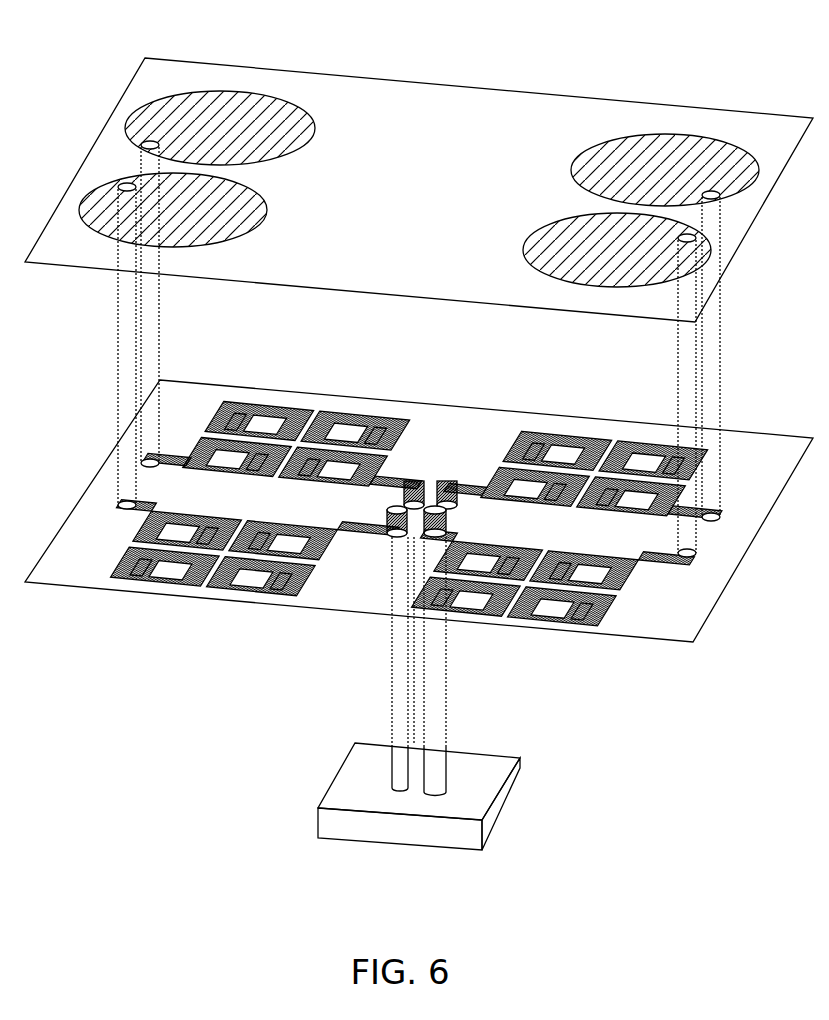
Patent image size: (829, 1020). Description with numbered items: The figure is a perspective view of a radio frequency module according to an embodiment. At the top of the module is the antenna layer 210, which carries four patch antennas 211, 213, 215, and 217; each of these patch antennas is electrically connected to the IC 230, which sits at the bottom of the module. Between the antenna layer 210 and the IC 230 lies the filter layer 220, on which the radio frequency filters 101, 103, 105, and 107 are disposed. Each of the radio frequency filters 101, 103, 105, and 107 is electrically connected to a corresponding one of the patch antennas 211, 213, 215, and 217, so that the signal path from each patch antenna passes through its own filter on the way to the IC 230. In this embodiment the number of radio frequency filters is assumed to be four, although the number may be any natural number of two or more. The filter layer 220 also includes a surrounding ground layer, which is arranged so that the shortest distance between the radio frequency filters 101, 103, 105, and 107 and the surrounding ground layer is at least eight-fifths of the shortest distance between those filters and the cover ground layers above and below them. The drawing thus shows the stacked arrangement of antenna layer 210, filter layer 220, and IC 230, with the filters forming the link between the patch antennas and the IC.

The radio frequency filter 101 is at (318, 398).
The radio frequency filter 103 is at (620, 428).
The radio frequency filter 105 is at (213, 588).
The radio frequency filter 107 is at (512, 624).
The antenna layer 210 is at (763, 122).
The patch antenna 211 is at (240, 102).
The patch antenna 213 is at (683, 146).
The patch antenna 215 is at (103, 222).
The patch antenna 217 is at (535, 268).
The filter layer 220 is at (763, 447).
The IC 230 is at (405, 833).